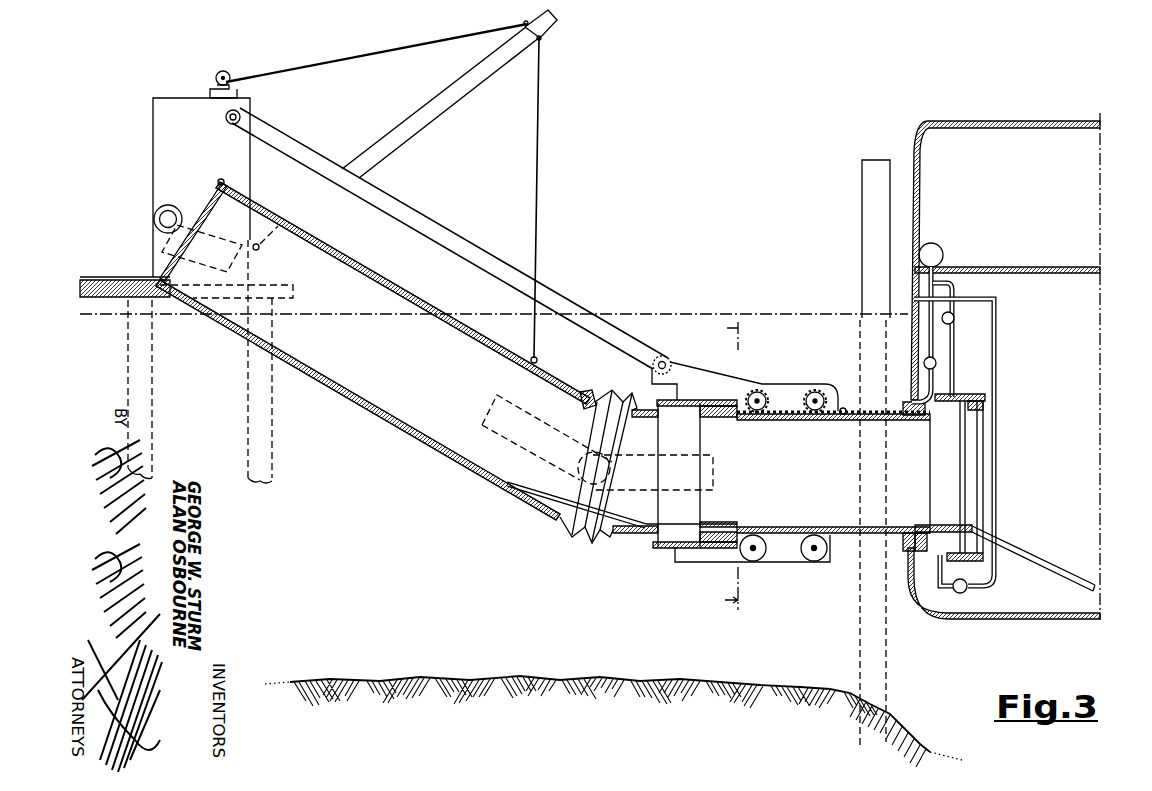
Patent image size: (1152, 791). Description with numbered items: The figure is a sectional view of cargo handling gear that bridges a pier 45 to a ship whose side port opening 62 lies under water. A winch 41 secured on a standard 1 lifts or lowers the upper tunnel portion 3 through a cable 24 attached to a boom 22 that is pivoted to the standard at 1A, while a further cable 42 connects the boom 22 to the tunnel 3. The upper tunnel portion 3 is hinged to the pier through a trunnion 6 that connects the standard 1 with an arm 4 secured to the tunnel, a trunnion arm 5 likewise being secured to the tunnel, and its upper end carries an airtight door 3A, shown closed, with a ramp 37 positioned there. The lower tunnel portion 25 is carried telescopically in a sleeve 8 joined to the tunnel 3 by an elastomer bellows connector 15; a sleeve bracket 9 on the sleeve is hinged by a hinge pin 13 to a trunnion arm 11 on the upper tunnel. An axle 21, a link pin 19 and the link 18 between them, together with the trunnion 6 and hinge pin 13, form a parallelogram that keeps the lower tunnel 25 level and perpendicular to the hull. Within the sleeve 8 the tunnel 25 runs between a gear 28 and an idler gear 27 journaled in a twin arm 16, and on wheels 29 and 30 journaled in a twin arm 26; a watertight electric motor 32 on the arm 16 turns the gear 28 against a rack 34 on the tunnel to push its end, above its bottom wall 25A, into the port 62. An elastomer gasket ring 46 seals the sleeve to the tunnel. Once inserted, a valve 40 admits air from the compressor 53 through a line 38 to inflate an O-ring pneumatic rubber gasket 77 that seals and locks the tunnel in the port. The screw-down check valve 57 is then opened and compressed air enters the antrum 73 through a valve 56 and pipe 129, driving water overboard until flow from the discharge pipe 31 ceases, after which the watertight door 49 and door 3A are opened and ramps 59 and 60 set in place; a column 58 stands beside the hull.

The standard 1 is at (183, 138).
The boom pivot 1A is at (259, 250).
The upper tunnel portion 3 is at (391, 355).
The airtight door 3A is at (216, 183).
The trunnion arm 4 is at (205, 211).
The upper tunnel trunnion arm 5 is at (719, 600).
The trunnion 6 is at (170, 204).
The sleeve 8 is at (656, 546).
The sleeve bracket 9 is at (643, 482).
The trunnion arm 11 is at (520, 419).
The hinge pin 13 is at (592, 448).
The elastomer bellows connector 15 is at (618, 383).
The twin arm 16 is at (695, 386).
The link 18 is at (436, 225).
The link pin 19 is at (665, 358).
The axle 21 is at (241, 116).
The boom 22 is at (440, 100).
The cable 24 is at (371, 57).
The lower tunnel portion 25 is at (830, 473).
The pipe bottom wall 25A is at (842, 532).
The twin arm 26 is at (782, 562).
The idler gear 27 is at (757, 390).
The gear 28 is at (828, 392).
The wheel 29 is at (753, 562).
The wheel 30 is at (814, 562).
The overboard water discharge pipe 31 is at (996, 350).
The watertight electric motor 32 is at (818, 384).
The rack 34 is at (847, 417).
The ramp 37 is at (134, 265).
The line 38 is at (934, 334).
The valve 40 is at (937, 362).
The winch 41 is at (229, 74).
The cable 42 is at (537, 180).
The pier 45 is at (130, 263).
The elastomer gasket ring 46 is at (725, 527).
The watertight door 49 is at (968, 447).
The air compressor 53 is at (943, 256).
The valve 56 is at (953, 315).
The screw-down check valve 57 is at (967, 590).
The pile / column 58 is at (868, 160).
The ramp 59 is at (1033, 555).
The ramp 60 is at (545, 488).
The side port opening 62 is at (918, 554).
The antrum 73 is at (982, 394).
The O-ring pneumatic rubber gasket 77 is at (908, 548).
The pipe 129 is at (950, 376).